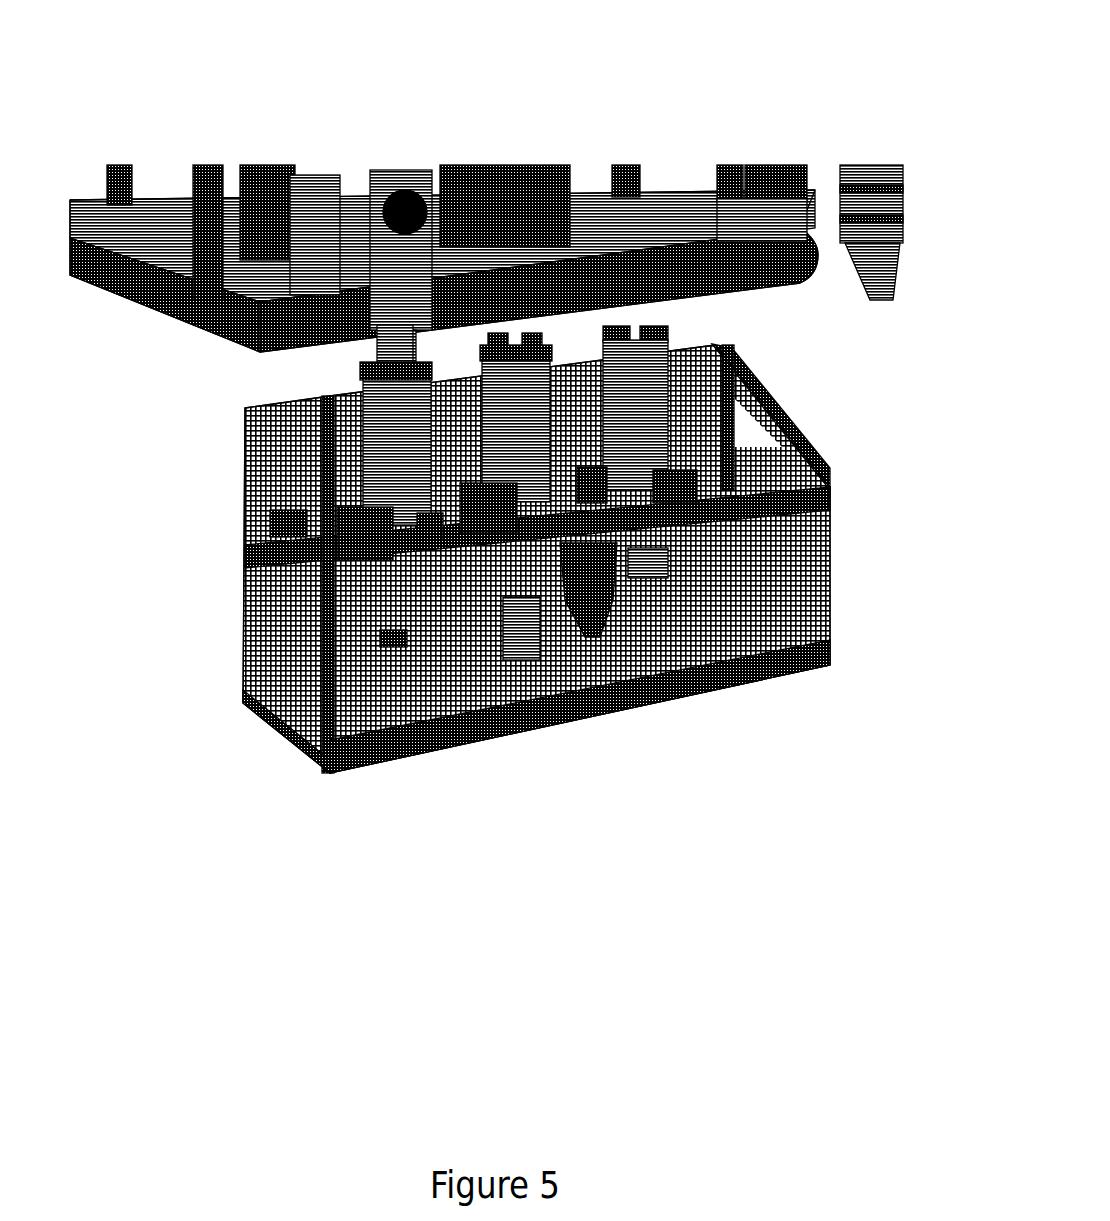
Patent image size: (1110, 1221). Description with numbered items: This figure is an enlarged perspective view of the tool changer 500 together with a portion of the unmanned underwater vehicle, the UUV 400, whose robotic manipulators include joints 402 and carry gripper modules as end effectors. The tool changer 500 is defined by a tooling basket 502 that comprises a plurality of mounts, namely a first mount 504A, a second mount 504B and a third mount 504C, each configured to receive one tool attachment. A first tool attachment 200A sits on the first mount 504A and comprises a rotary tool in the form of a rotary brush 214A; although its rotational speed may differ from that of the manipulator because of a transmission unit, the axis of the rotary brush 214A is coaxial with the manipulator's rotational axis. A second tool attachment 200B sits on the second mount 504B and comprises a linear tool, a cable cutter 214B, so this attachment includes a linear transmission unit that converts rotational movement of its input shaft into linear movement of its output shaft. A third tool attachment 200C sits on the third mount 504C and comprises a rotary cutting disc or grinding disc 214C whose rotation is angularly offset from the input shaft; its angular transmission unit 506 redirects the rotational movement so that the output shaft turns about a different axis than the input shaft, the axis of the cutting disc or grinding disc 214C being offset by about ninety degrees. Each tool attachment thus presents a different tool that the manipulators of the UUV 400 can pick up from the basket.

The first tool attachment 200A is at (386, 455).
The second tool attachment 200B is at (521, 415).
The third tool attachment 200C is at (641, 398).
The UUV 400 is at (360, 110).
The joints 402 is at (897, 286).
The tool changer 500 is at (505, 616).
The tooling basket 502 is at (272, 720).
The first mount 504A is at (376, 540).
The second mount 504B is at (468, 510).
The third mount 504C is at (682, 490).
The angular transmission unit 506 is at (651, 562).
The rotary brush 214A is at (396, 659).
The cable cutter 214B is at (533, 655).
The cutting disc or grinding disc 214C is at (608, 592).